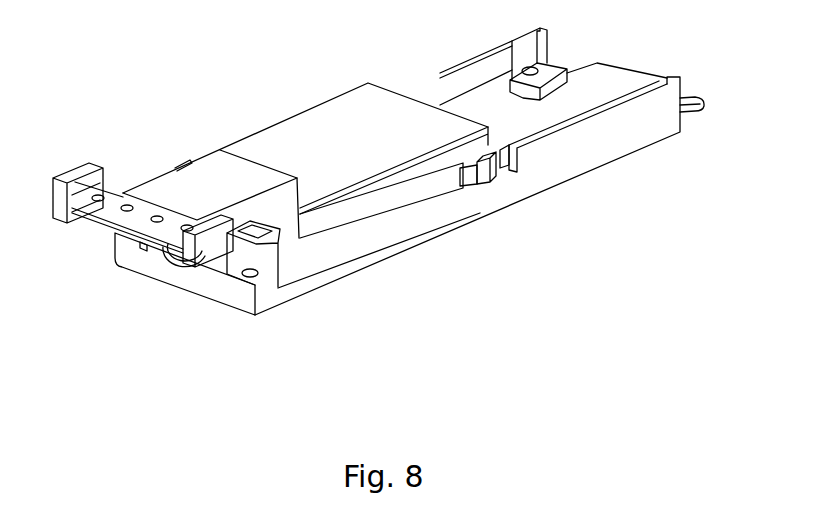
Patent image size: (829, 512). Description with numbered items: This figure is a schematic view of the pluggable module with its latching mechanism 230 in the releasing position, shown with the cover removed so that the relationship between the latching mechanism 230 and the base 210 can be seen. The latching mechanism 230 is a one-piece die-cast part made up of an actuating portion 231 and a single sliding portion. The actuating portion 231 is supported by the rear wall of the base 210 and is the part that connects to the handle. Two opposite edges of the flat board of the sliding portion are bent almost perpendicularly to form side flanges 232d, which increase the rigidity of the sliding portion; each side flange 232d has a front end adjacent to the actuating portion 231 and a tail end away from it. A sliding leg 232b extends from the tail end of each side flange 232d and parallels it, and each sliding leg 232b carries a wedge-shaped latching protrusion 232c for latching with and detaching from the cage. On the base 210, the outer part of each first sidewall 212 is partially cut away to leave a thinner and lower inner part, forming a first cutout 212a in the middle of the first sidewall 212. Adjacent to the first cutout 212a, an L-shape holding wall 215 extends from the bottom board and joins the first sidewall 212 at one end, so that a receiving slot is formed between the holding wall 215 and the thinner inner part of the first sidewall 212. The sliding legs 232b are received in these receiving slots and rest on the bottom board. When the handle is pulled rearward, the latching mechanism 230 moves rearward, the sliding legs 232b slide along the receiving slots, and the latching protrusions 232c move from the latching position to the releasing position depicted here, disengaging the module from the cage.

The base 210 is at (423, 185).
The first sidewall 212 is at (573, 163).
The first cutout 212a is at (467, 197).
The L-shape holding wall 215 is at (507, 157).
The latching mechanism 230 is at (316, 188).
The actuating portion 231 is at (348, 110).
The sliding leg 232b is at (470, 177).
The latching protrusion 232c is at (487, 167).
The side flange 232d is at (348, 193).